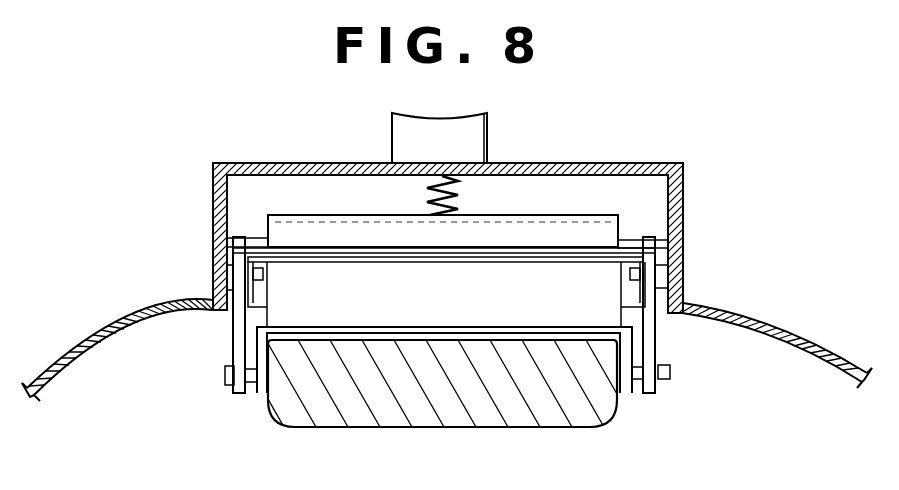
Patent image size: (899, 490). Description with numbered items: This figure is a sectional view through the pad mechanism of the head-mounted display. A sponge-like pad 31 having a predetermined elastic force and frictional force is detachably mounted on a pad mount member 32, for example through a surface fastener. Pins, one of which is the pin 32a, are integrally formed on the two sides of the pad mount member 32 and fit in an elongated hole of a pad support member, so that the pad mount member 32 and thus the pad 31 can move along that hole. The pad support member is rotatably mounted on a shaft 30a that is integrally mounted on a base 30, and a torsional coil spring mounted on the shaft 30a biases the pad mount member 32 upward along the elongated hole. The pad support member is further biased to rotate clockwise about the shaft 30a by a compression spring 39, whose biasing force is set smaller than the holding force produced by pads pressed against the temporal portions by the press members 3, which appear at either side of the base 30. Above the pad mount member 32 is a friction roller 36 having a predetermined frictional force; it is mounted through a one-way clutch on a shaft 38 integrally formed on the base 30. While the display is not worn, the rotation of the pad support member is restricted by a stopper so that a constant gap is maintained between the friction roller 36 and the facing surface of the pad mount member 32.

The press member 3 is at (118, 318).
The base 30 is at (610, 163).
The shaft 30a is at (225, 282).
The sponge-like pad 31 is at (512, 407).
The pad mount member 32 is at (372, 335).
The pin 32a is at (226, 374).
The friction roller 36 is at (350, 222).
The shaft 38 is at (256, 238).
The compression spring 39 is at (458, 188).